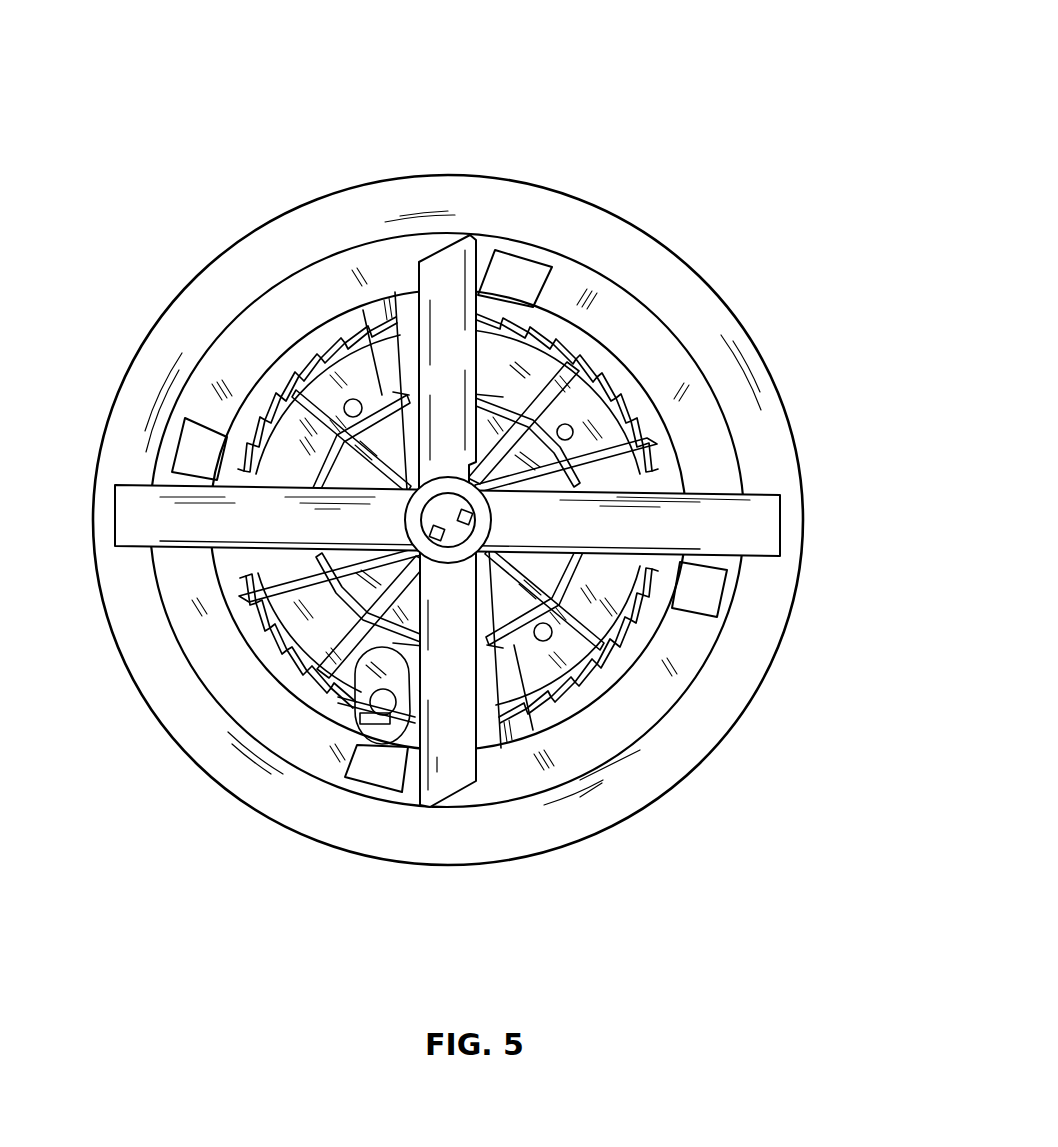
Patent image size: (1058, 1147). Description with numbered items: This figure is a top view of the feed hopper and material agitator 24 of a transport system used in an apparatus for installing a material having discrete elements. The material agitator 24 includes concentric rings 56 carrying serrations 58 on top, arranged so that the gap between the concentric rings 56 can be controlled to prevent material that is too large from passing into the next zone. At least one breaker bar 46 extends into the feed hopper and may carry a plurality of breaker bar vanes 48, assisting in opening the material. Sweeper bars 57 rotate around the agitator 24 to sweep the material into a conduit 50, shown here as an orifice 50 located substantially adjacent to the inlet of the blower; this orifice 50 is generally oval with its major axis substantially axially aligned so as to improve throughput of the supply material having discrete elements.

The material agitator 24 is at (582, 100).
The breaker bar 46 is at (612, 668).
The breaker bar vanes 48 is at (760, 534).
The orifice 50 is at (338, 700).
The concentric rings 56 is at (304, 352).
The sweeper bars 57 is at (303, 435).
The serrations 58 is at (583, 356).